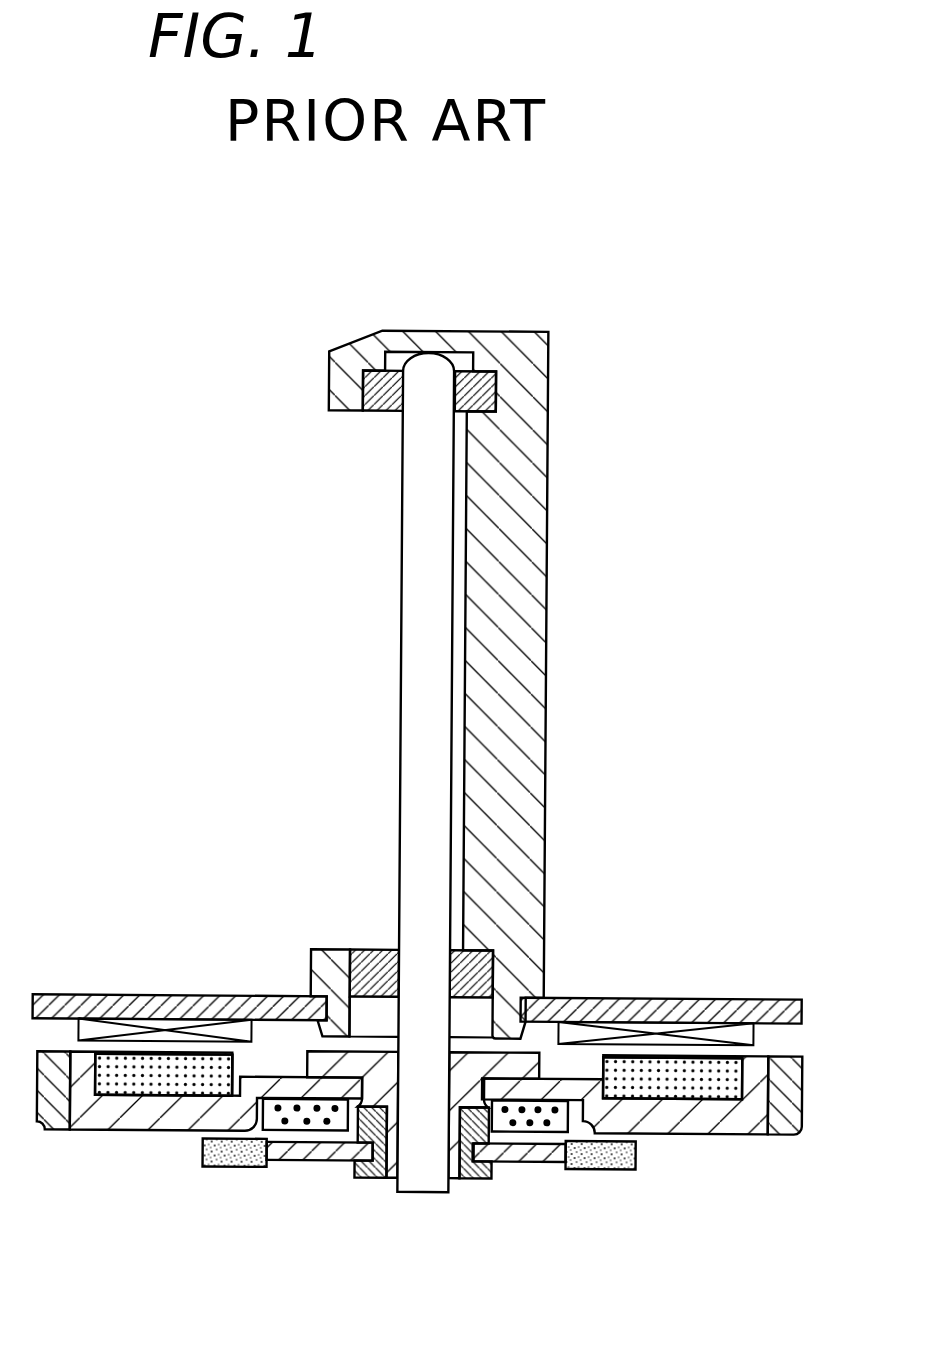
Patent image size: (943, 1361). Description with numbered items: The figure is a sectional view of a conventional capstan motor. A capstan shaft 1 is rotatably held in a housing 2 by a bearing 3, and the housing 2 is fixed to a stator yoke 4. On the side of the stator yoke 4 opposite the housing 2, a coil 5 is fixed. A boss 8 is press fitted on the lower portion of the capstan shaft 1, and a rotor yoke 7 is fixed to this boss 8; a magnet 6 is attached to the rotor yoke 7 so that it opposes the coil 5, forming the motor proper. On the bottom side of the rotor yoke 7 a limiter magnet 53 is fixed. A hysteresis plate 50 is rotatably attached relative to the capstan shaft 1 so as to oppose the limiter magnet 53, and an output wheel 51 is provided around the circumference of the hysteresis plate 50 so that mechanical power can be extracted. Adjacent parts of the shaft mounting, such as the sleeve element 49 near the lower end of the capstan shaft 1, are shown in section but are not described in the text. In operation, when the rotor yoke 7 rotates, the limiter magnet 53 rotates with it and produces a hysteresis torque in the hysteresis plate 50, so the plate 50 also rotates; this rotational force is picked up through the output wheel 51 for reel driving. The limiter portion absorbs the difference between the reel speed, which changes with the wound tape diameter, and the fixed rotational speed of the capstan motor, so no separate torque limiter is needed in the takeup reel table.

The capstan shaft 1 is at (420, 621).
The housing 2 is at (543, 511).
The bearing 3 is at (368, 413).
The stator yoke 4 is at (602, 997).
The coil 5 is at (666, 1028).
The magnet 6 is at (182, 1097).
The rotor yoke 7 is at (103, 1127).
The boss 8 is at (311, 1050).
The bearing sleeve 49 is at (475, 1178).
The hysteresis plate 50 is at (517, 1163).
The output wheel 51 is at (622, 1168).
The limiter magnet 53 is at (277, 1105).